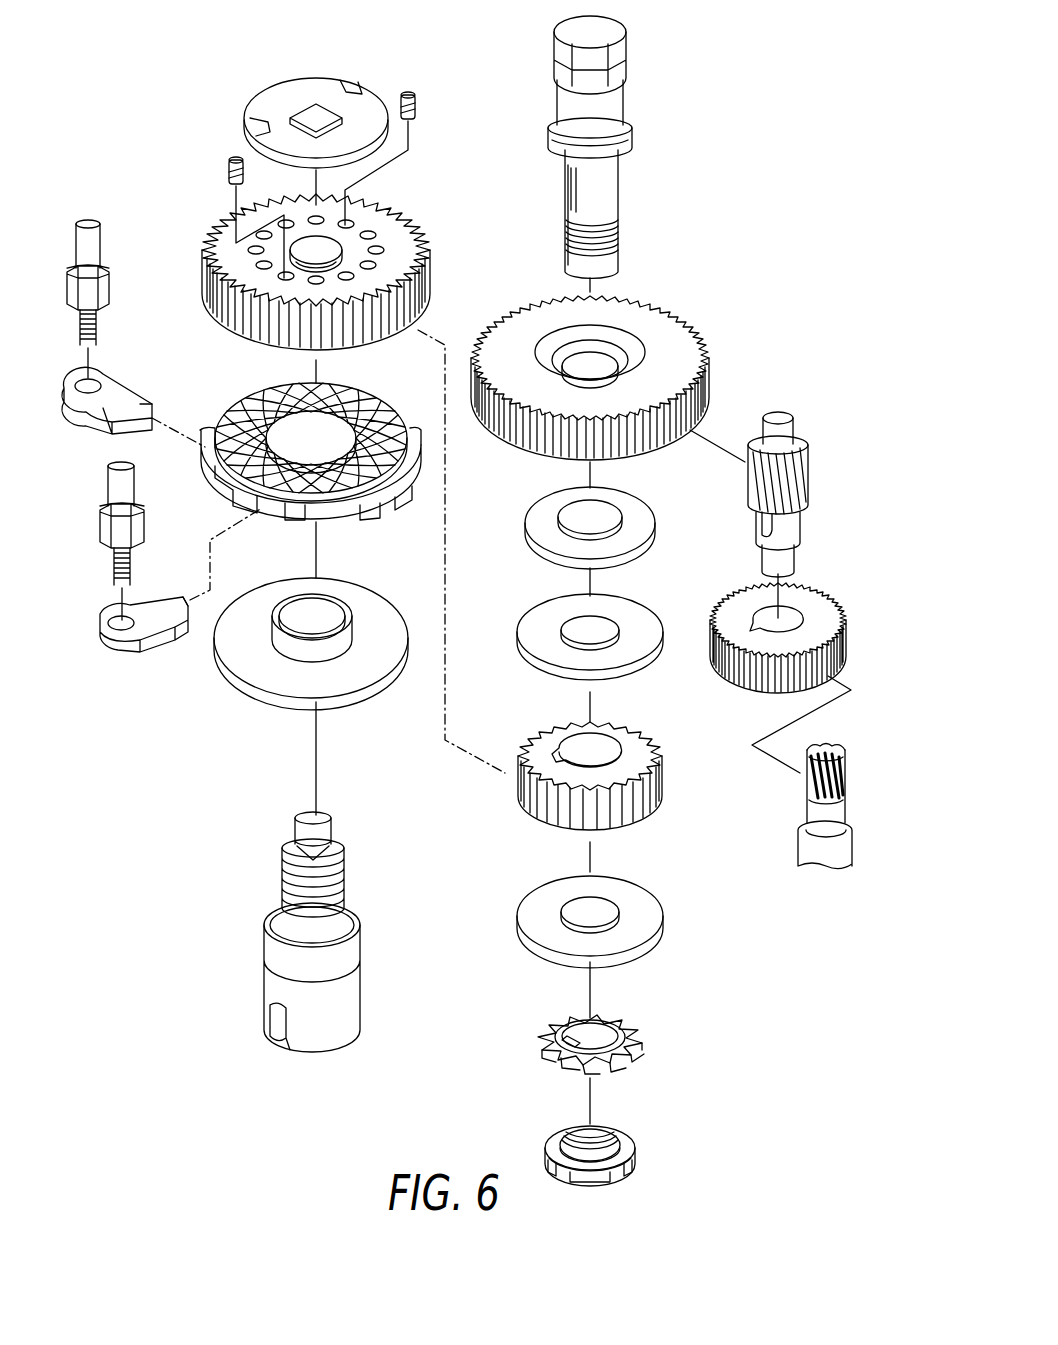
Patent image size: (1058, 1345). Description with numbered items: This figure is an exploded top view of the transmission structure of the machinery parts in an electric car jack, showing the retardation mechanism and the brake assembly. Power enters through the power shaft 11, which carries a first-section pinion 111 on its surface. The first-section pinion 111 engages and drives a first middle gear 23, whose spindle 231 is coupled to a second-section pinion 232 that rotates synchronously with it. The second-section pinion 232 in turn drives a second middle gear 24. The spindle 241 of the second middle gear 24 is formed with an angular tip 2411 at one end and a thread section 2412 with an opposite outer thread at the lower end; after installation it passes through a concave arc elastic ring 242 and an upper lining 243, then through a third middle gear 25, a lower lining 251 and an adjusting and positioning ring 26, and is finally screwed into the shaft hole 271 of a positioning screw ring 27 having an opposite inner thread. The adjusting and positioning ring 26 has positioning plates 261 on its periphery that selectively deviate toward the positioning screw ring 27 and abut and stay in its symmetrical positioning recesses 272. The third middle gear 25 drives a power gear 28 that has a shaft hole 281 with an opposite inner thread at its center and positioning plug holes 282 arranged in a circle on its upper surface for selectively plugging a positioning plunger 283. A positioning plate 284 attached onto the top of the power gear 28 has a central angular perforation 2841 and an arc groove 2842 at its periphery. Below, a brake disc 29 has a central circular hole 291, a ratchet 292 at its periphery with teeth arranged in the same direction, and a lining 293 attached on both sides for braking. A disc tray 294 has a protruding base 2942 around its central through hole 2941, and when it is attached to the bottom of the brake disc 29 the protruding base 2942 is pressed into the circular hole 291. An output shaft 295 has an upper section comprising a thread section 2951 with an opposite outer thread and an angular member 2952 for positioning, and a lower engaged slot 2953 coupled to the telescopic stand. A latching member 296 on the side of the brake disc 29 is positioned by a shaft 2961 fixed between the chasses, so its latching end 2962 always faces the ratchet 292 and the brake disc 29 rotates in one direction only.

The power shaft 11 is at (790, 806).
The first-section pinion 111 is at (815, 788).
The first middle gear 23 is at (815, 612).
The spindle 231 is at (811, 515).
The second-section pinion 232 is at (802, 478).
The second middle gear 24 is at (650, 346).
The spindle 241 is at (630, 147).
The angular tip 2411 is at (614, 60).
The thread section 2412 is at (620, 233).
The concave arc elastic ring 242 is at (632, 522).
The upper lining 243 is at (630, 626).
The third middle gear 25 is at (628, 758).
The lower lining 251 is at (630, 906).
The adjusting and positioning ring 26 is at (620, 1047).
The positioning plates 261 is at (632, 1054).
The positioning screw ring 27 is at (622, 1158).
The shaft hole 271 is at (612, 1146).
The symmetrical positioning recesses 272 is at (620, 1168).
The power gear 28 is at (310, 260).
The shaft hole 281 is at (332, 250).
The positioning plug holes 282 is at (256, 272).
The positioning plunger 283 is at (228, 166).
The positioning plate 284 is at (331, 95).
The angular perforation 2841 is at (320, 120).
The arc groove 2842 is at (270, 146).
The brake disc 29 is at (313, 463).
The circular hole 291 is at (298, 450).
The ratchet 292 is at (410, 486).
The lining 293 is at (372, 418).
The disc tray 294 is at (281, 645).
The through hole 2941 is at (302, 616).
The protruding base 2942 is at (282, 640).
The output shaft 295 is at (269, 930).
The thread section 2951 is at (282, 869).
The angular member 2952 is at (296, 842).
The engaged slot 2953 is at (280, 1020).
The latching member 296 is at (162, 488).
The shaft 2961 is at (92, 248).
The latching end 2962 is at (150, 412).